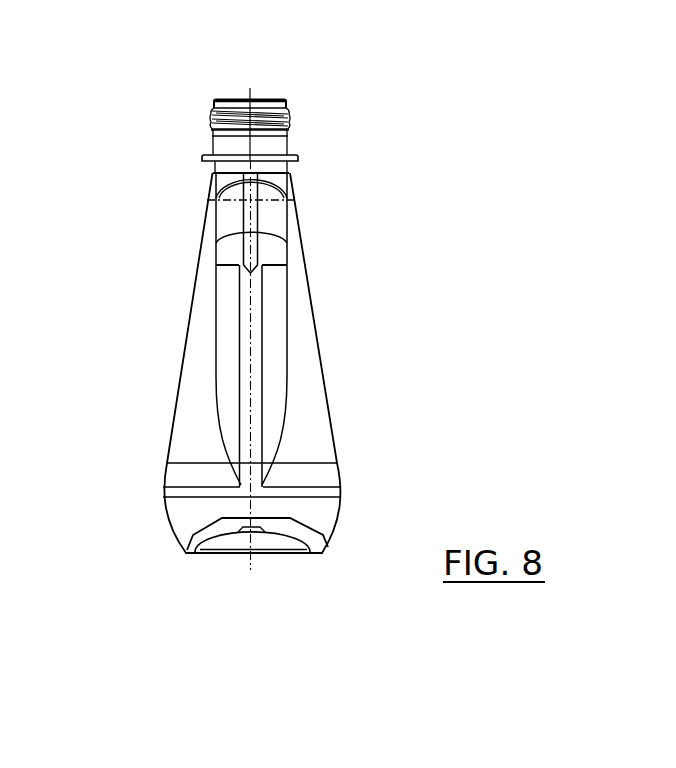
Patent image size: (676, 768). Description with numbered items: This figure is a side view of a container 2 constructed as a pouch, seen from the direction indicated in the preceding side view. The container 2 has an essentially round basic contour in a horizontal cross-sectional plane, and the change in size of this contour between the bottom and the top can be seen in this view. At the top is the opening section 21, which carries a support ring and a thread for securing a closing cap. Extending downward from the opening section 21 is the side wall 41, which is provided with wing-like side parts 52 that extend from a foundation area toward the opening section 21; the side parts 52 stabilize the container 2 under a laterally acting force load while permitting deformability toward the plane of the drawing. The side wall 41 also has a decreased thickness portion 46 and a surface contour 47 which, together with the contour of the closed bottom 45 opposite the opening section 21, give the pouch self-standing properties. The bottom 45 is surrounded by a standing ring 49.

The container 2 is at (134, 273).
The opening section 21 is at (240, 98).
The side wall 41 is at (315, 383).
The bottom 45 is at (217, 543).
The decreased thickness portion 46 is at (268, 543).
The surface contour 47 is at (282, 353).
The standing ring 49 is at (313, 553).
The wing-like side parts 52 is at (253, 297).